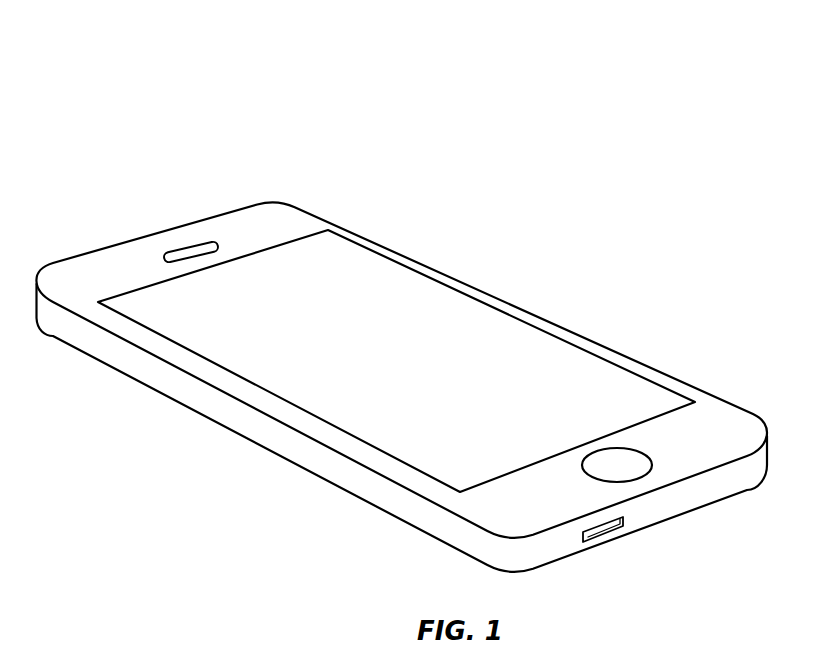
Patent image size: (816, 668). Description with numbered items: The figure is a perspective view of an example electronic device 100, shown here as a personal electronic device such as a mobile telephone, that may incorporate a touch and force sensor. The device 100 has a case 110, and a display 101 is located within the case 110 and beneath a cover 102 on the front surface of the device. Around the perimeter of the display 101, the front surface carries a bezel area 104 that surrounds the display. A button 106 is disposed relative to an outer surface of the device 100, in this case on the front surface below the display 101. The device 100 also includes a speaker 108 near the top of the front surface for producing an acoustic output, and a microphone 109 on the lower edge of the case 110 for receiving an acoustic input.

The electronic device 100 is at (401, 300).
The display 101 is at (396, 361).
The cover 102 is at (458, 328).
The bezel area 104 is at (287, 223).
The button 106 is at (617, 465).
The speaker 108 is at (195, 250).
The microphone 109 is at (601, 543).
The case 110 is at (401, 366).